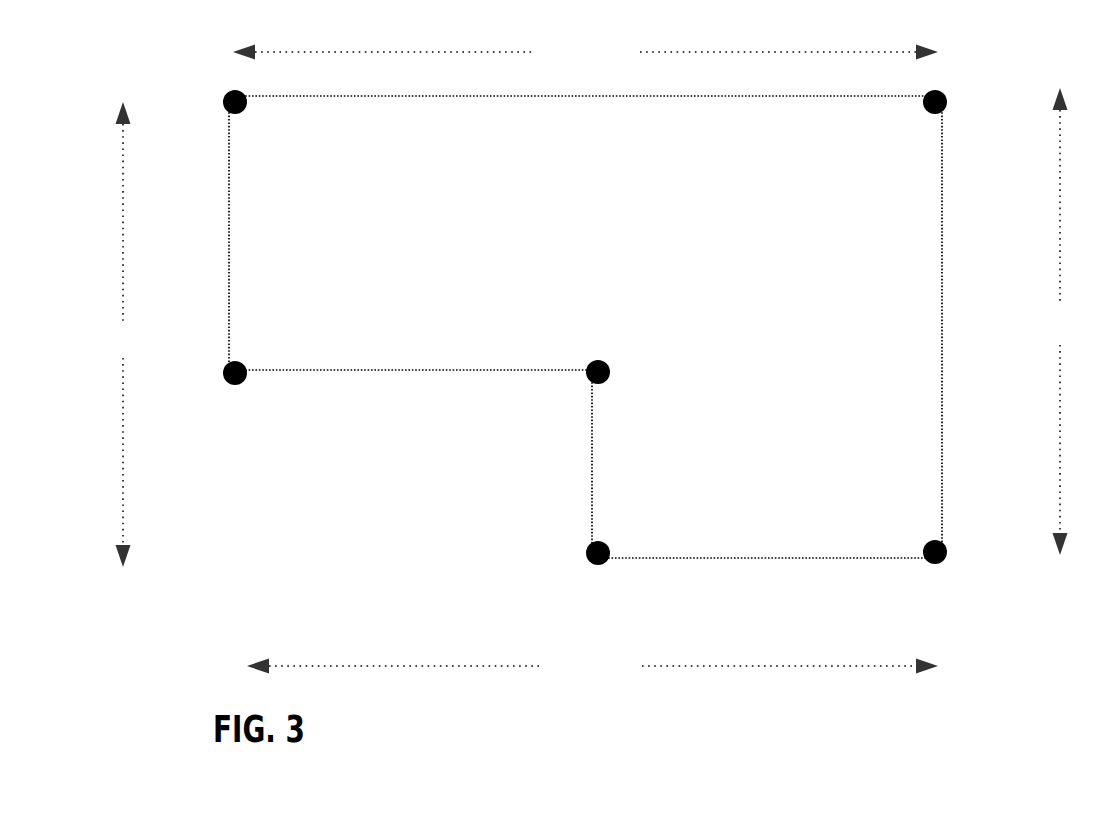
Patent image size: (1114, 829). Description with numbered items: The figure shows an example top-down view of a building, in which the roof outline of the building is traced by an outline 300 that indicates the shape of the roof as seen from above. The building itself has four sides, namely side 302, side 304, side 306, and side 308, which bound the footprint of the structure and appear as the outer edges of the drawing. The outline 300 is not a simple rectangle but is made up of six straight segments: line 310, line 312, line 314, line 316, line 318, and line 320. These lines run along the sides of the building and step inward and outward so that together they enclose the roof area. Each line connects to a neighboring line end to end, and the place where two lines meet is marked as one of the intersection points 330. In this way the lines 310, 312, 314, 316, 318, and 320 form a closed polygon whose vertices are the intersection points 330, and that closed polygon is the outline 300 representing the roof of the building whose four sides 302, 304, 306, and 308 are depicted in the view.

The outline 300 is at (587, 337).
The side 302 is at (592, 665).
The side 304 is at (1064, 321).
The side 306 is at (585, 52).
The side 308 is at (125, 334).
The line 310 is at (416, 385).
The line 312 is at (545, 462).
The line 314 is at (766, 571).
The line 316 is at (988, 327).
The line 318 is at (585, 109).
The line 320 is at (184, 237).
The intersection points 330 is at (570, 351).